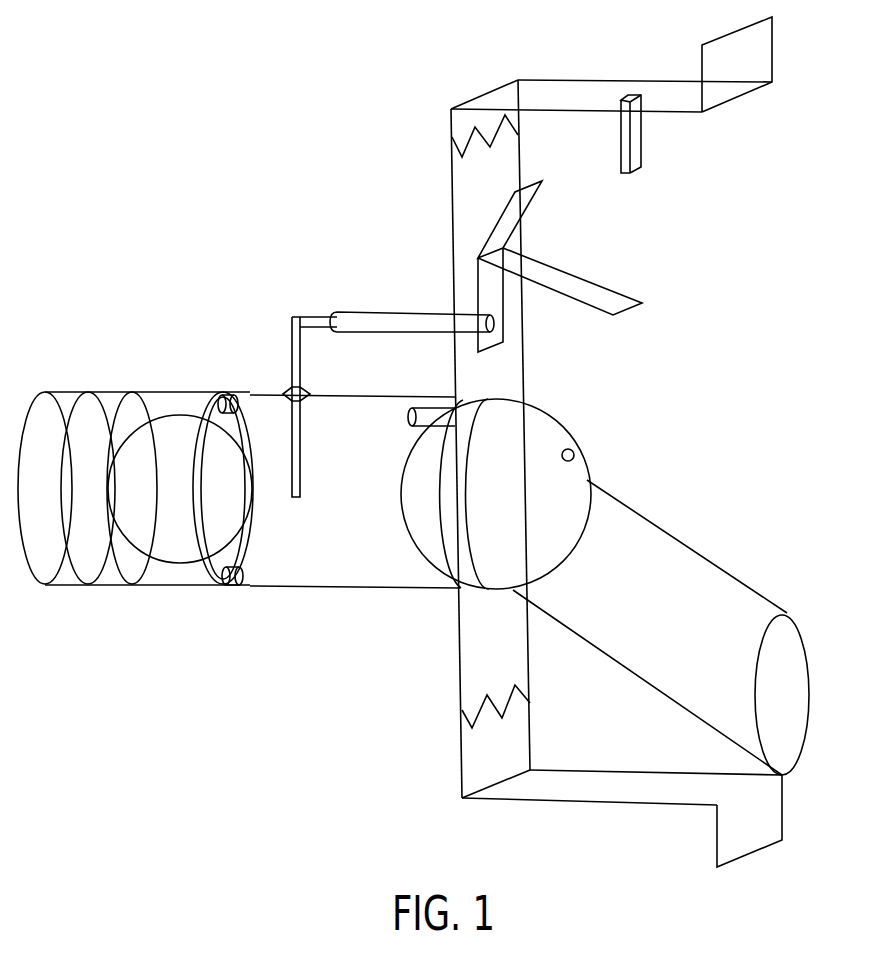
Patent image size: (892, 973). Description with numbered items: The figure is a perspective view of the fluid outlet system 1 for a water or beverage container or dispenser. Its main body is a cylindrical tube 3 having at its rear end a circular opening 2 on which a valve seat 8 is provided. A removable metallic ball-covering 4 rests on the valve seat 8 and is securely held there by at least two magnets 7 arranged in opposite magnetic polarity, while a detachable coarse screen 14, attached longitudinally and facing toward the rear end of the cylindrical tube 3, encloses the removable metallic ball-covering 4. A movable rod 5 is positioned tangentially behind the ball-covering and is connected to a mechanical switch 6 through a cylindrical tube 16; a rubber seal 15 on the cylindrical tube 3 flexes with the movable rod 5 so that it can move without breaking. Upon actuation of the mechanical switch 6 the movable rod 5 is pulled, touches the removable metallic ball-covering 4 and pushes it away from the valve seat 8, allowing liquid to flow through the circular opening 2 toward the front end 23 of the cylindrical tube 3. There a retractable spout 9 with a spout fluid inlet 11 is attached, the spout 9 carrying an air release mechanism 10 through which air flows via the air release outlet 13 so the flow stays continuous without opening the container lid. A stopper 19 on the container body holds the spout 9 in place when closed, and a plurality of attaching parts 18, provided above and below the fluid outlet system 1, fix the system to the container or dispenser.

The fluid outlet system 1 is at (778, 256).
The circular opening 2 is at (218, 395).
The cylindrical tube 3 is at (292, 575).
The removable metallic ball-covering 4 is at (175, 525).
The movable rod 5 is at (300, 478).
The mechanical switch 6 is at (540, 268).
The magnets 7 is at (235, 587).
The valve seat 8 is at (250, 500).
The retractable spout 9 is at (662, 528).
The air release mechanism 10 is at (576, 452).
The spout fluid inlet 11 is at (795, 685).
The air release outlet 13 is at (408, 413).
The detachable coarse screen 14 is at (92, 402).
The rubber seal 15 is at (288, 390).
The cylindrical tube 16 is at (410, 310).
The attaching parts 18 is at (452, 148).
The stopper 19 is at (642, 163).
The front end 23 is at (422, 542).